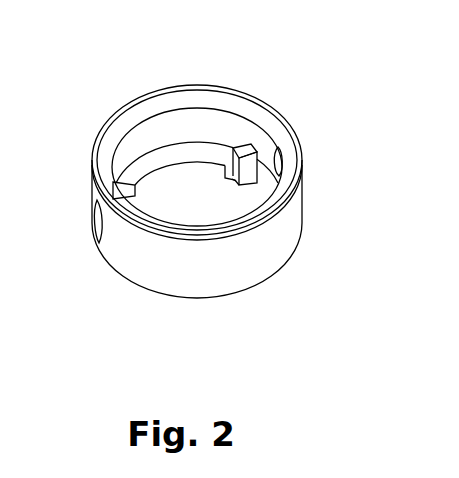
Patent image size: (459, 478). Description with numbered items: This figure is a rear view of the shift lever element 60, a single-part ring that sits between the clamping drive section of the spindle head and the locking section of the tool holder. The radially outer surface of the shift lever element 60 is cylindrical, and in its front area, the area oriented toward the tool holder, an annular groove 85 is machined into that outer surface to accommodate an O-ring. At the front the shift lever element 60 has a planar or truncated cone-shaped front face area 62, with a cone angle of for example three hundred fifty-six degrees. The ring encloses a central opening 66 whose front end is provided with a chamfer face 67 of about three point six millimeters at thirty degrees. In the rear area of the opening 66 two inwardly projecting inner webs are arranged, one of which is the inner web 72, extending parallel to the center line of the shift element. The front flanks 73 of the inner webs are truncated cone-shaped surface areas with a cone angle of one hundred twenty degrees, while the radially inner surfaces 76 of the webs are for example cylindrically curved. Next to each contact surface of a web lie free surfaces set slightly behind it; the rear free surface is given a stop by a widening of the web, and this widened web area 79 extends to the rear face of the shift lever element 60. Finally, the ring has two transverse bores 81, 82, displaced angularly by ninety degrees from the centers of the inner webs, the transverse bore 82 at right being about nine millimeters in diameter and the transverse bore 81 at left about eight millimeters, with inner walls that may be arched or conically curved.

The shift lever element 60 is at (148, 300).
The front face area 62 is at (108, 125).
The opening 66 is at (189, 128).
The face 67 is at (144, 115).
The inner web 72 is at (240, 163).
The front flank 73 is at (214, 150).
The radially inner surface 76 is at (178, 164).
The widened web area 79 is at (232, 179).
The transverse bore 81 is at (98, 246).
The transverse bore 82 is at (279, 155).
The annular groove 85 is at (199, 241).